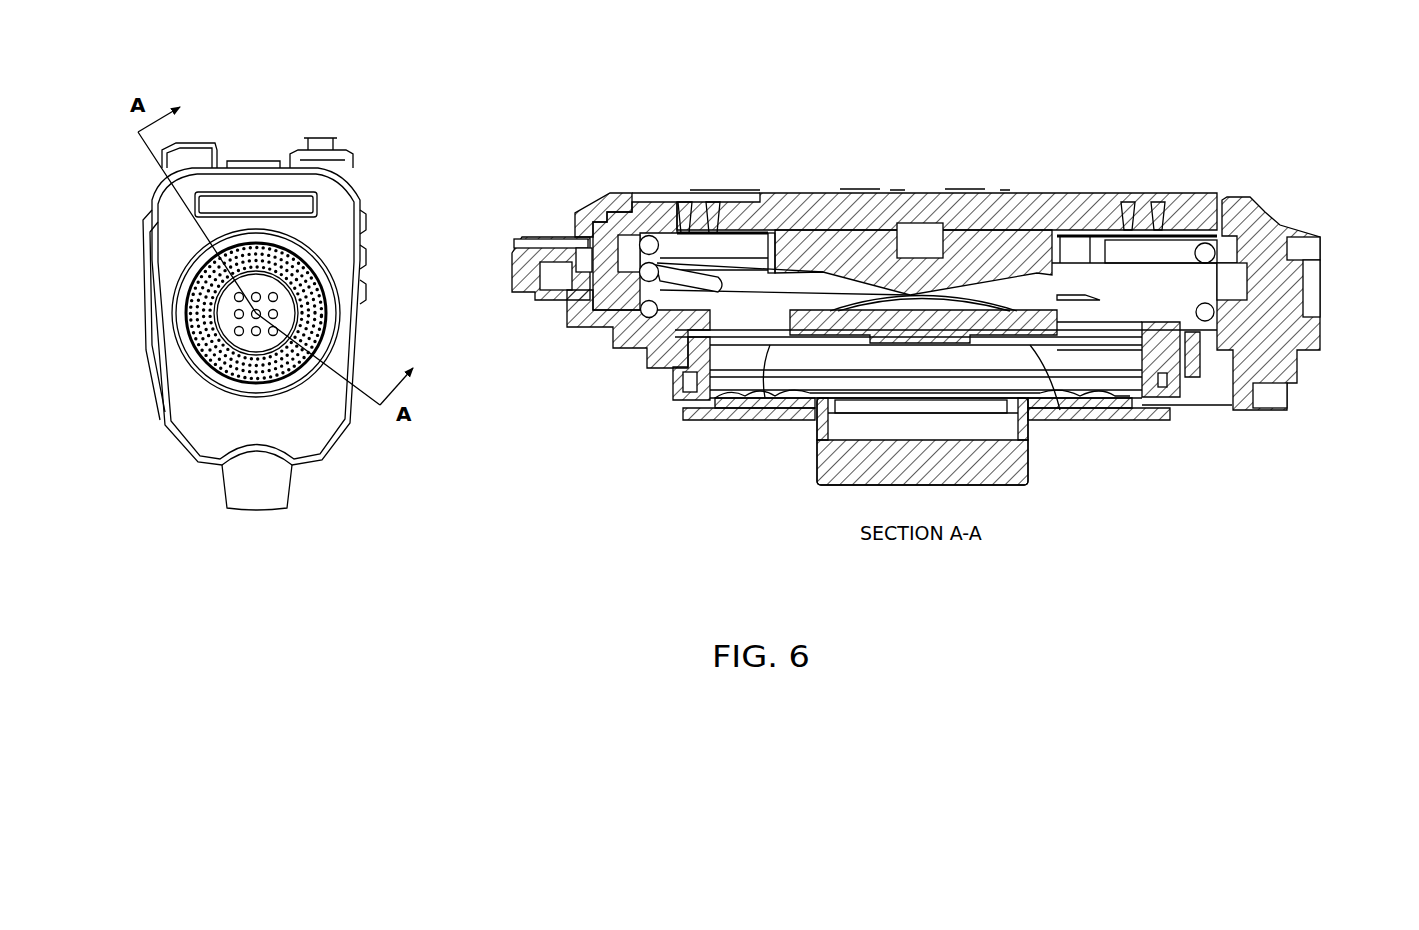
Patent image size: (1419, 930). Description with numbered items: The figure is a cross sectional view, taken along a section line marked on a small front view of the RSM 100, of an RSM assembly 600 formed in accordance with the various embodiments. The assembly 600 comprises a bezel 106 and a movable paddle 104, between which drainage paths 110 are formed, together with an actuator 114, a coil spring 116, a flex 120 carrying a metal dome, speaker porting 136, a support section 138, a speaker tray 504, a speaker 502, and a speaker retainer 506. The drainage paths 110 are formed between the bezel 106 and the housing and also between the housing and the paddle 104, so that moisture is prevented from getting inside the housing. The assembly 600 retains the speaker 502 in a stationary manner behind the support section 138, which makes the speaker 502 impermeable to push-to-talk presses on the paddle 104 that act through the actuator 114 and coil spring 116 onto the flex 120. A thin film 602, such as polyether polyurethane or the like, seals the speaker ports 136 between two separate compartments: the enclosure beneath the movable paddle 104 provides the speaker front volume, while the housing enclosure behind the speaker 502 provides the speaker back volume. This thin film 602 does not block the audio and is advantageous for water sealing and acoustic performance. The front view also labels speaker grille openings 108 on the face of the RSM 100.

The RSM 100 is at (353, 185).
The movable paddle 104 is at (910, 190).
The bezel 106 is at (602, 195).
The speaker grille / gaskets 108 is at (326, 322).
The drainage paths 110 is at (1278, 236).
The actuator 114 is at (1030, 240).
The coil spring 116 is at (640, 272).
The flex 120 is at (868, 318).
The speaker porting 136 is at (745, 425).
The support section 138 is at (688, 325).
The speaker 502 is at (1020, 482).
The speaker tray 504 is at (1183, 395).
The speaker retainer 506 is at (698, 420).
The RSM assembly 600 is at (1248, 635).
The thin film 602 is at (1130, 337).